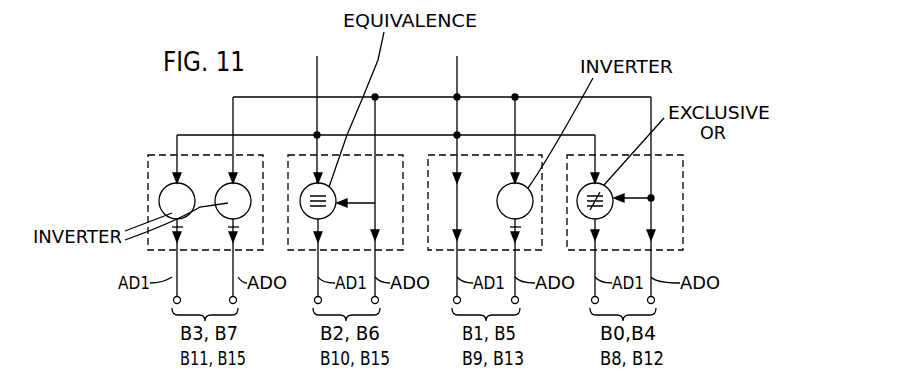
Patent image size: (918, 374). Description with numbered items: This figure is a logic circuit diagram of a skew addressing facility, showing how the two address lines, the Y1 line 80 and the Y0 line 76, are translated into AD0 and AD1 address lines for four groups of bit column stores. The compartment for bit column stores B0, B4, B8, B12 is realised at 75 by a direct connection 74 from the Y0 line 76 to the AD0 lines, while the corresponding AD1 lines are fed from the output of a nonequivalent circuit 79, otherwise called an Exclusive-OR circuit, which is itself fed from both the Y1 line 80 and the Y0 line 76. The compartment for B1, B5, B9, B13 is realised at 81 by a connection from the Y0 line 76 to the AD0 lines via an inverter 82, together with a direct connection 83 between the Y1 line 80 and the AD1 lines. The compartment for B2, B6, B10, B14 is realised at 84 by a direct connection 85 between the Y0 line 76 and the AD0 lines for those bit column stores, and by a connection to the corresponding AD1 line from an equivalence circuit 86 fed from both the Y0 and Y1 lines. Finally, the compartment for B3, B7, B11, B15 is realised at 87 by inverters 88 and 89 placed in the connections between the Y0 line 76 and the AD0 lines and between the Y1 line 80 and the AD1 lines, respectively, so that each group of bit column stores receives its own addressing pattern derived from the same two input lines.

The direct connection 74 is at (655, 262).
The compartment realisation for B0, B4, B8, B12 75 is at (682, 200).
The Y0 line 76 is at (457, 78).
The nonequivalent circuit 79 is at (612, 189).
The Y1 line 80 is at (317, 80).
The compartment realisation for B1, B5, B9, B13 81 is at (527, 153).
The inverter 82 is at (503, 190).
The AD1 output line 83 is at (461, 220).
The compartment realisation for B2, B6, B10, B14 84 is at (397, 153).
The direct connection 85 is at (375, 220).
The equivalence circuit 86 is at (333, 190).
The compartment realisation for B3, B7, B11, B15 87 is at (147, 161).
The inverter 88 is at (229, 218).
The inverter 89 is at (160, 203).